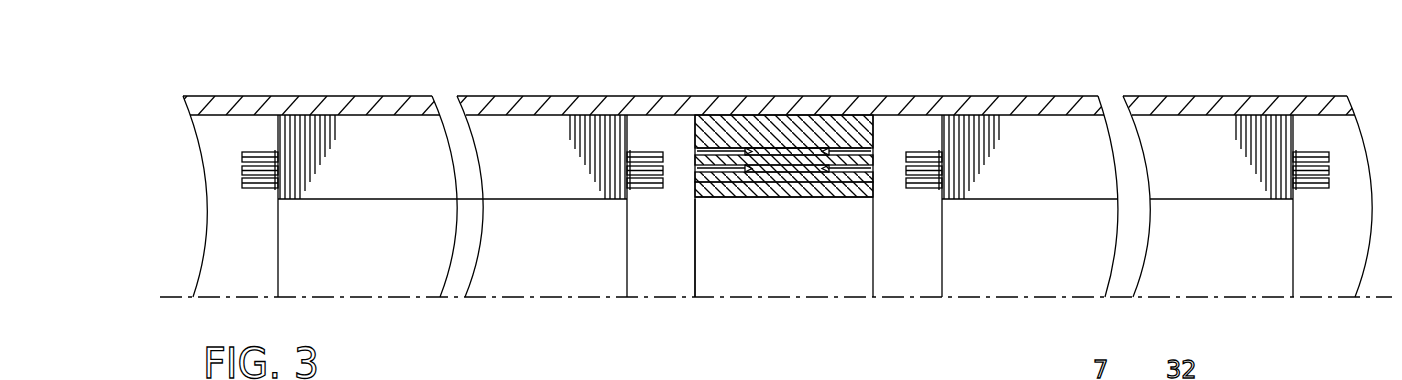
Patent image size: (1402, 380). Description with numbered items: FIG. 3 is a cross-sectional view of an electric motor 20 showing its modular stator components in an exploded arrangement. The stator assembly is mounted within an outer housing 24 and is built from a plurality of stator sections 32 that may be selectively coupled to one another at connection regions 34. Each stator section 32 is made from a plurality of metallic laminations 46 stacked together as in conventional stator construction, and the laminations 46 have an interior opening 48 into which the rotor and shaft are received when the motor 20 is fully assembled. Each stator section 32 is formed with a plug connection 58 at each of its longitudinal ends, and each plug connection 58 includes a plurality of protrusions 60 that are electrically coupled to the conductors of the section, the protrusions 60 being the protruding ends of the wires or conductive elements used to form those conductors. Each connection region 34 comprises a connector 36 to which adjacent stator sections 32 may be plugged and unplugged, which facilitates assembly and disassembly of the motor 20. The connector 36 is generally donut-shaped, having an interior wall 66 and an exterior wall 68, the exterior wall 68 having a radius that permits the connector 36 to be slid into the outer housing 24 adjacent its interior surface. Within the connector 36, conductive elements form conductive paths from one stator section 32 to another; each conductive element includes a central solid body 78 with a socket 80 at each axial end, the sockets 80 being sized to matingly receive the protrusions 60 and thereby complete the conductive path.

The electric motor 20 is at (552, 66).
The outer housing 24 is at (758, 103).
The stator section 32 is at (383, 123).
The connection region 34 is at (812, 84).
The connector 36 is at (825, 198).
The metallic laminations 46 is at (322, 130).
The interior opening 48 is at (1007, 285).
The plug connection 58 is at (252, 128).
The protrusions 60 is at (242, 157).
The interior wall 66 is at (701, 254).
The exterior wall 68 is at (711, 111).
The central solid body 78 is at (787, 190).
The socket 80 is at (713, 180).